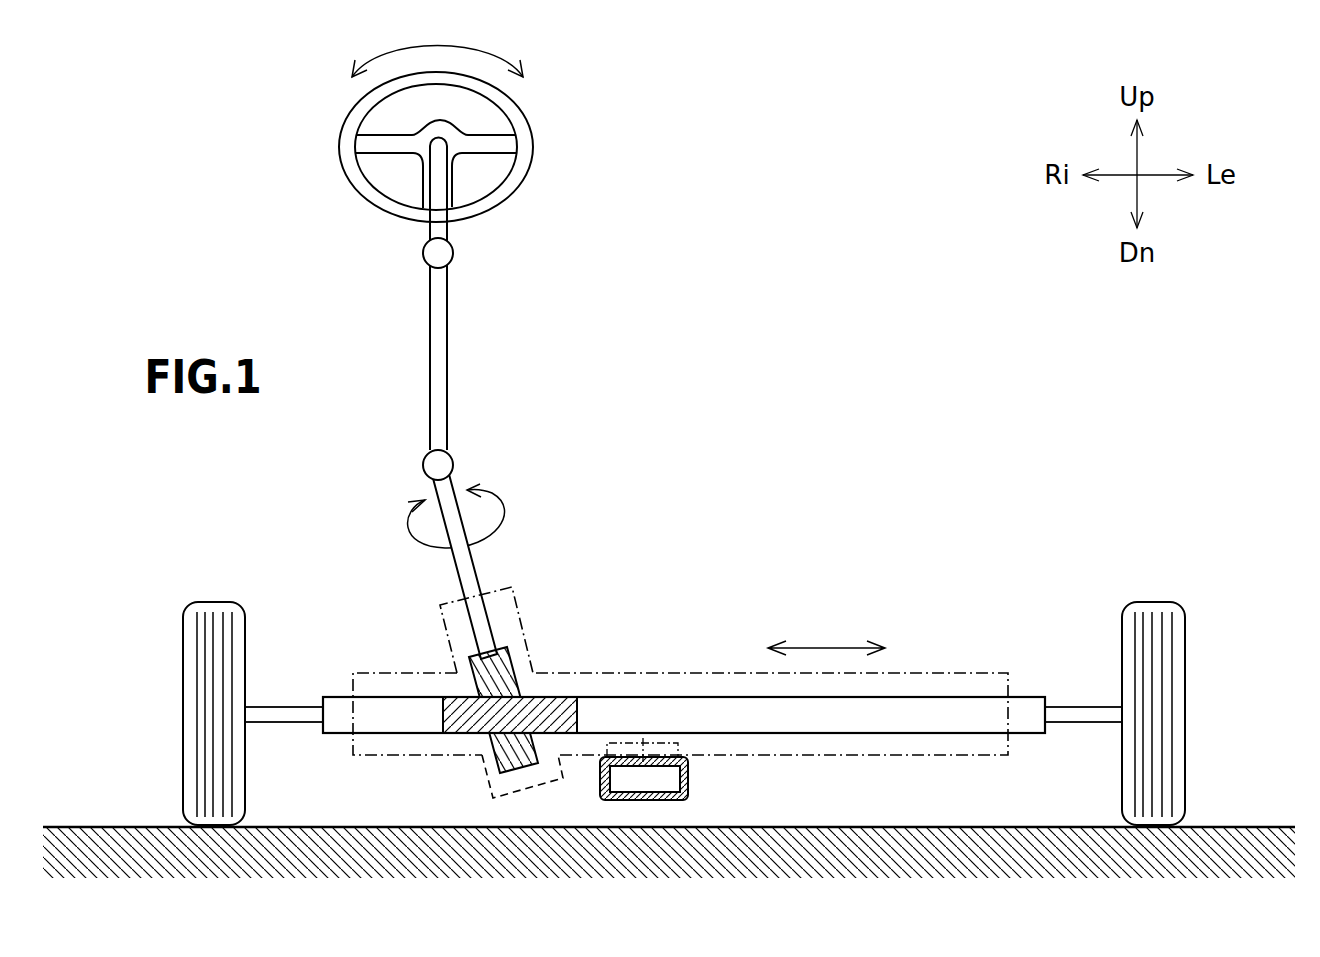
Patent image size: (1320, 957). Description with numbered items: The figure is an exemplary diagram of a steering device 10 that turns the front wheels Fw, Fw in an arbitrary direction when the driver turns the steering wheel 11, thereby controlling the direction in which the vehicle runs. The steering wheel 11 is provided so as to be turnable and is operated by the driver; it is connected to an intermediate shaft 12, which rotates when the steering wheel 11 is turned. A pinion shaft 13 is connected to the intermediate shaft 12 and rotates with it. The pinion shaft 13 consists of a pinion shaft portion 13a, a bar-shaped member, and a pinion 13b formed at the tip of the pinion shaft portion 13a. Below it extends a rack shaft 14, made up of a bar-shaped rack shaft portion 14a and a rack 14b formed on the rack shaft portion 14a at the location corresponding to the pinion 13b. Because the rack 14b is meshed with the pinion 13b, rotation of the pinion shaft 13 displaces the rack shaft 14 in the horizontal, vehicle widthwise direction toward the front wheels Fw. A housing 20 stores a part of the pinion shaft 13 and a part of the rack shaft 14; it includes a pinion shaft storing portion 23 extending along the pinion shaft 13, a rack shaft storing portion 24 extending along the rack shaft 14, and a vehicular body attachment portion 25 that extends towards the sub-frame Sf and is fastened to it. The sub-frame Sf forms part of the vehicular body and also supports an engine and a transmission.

The steering device 10 is at (140, 150).
The steering wheel 11 is at (535, 142).
The intermediate shaft 12 is at (448, 357).
The pinion shaft 13 is at (526, 611).
The pinion shaft portion 13a is at (470, 568).
The pinion 13b is at (539, 674).
The rack shaft 14 is at (684, 654).
The rack shaft portion 14a is at (726, 719).
The rack 14b is at (551, 680).
The housing 20 is at (684, 674).
The pinion shaft storing portion 23 is at (440, 624).
The rack shaft storing portion 24 is at (911, 673).
The vehicular body attachment portion 25 is at (680, 748).
The front wheels Fw is at (210, 600).
The sub-frame Sf is at (600, 781).